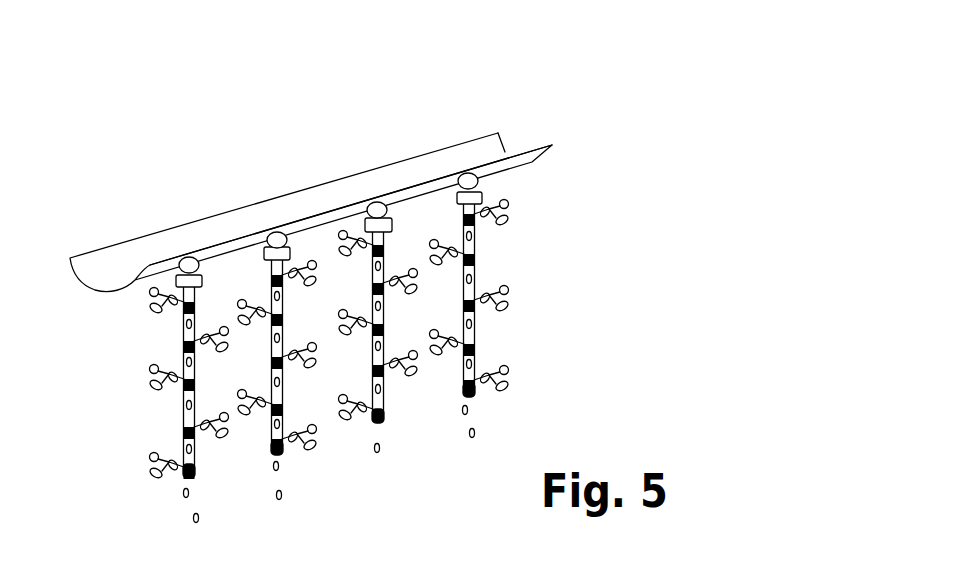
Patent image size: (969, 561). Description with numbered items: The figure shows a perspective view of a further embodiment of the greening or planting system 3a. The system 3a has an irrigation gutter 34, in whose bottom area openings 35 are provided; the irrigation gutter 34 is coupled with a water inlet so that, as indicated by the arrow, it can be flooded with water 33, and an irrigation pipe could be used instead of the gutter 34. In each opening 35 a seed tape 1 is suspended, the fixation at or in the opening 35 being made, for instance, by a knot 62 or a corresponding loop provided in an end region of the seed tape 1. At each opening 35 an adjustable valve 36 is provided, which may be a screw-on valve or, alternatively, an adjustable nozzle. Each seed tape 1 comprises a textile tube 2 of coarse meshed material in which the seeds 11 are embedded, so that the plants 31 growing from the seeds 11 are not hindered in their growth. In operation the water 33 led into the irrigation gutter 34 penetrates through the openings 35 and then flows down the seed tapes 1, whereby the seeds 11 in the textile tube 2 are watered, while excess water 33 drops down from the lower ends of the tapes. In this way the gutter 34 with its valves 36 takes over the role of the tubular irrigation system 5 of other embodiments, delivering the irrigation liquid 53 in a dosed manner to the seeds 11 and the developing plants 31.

The irrigation system 5 is at (148, 222).
The greening or planting system 3a is at (497, 100).
The irrigation liquid 53 is at (485, 157).
The irrigation gutter 34 is at (482, 183).
The opening 35 is at (202, 273).
The knot 62 is at (270, 242).
The adjustable valve 36 is at (497, 202).
The seed tape 1 is at (559, 277).
The plant 31 is at (508, 286).
The textile tube 2 is at (475, 328).
The water 33 is at (475, 363).
The seeds 11 is at (468, 397).